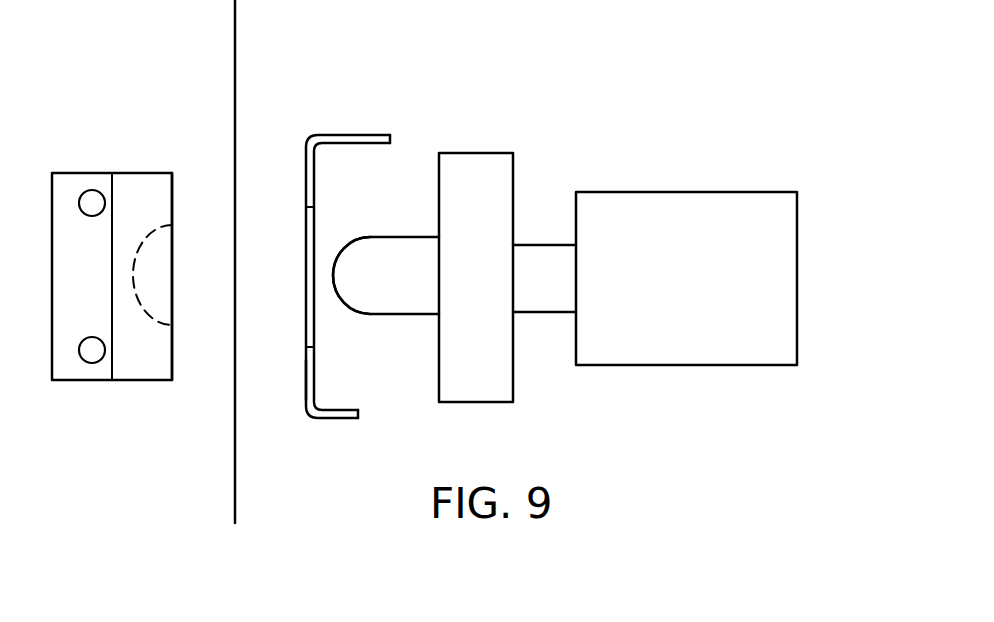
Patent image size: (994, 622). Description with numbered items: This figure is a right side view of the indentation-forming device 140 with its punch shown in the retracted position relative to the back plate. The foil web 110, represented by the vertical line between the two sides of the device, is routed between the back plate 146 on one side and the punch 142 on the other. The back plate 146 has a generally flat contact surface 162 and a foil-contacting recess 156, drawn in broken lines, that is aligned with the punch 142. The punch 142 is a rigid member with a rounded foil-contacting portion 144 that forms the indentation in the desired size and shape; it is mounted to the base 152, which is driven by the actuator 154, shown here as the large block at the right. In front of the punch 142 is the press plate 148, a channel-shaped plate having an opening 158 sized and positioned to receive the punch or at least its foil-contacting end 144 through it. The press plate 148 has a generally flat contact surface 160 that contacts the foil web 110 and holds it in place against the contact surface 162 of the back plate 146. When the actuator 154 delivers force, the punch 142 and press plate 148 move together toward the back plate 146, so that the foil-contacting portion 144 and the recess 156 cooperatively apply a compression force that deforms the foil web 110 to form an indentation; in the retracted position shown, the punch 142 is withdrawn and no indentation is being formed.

The foil web 110 is at (235, 56).
The indentation-forming device 140 is at (673, 435).
The punch 142 is at (390, 237).
The foil-contacting portion 144 is at (343, 307).
The back plate 146 is at (117, 173).
The press plate 148 is at (330, 135).
The base 152 is at (507, 151).
The actuator 154 is at (655, 191).
The foil-contacting recess 156 is at (160, 312).
The opening 158 is at (306, 245).
The contact surface 160 is at (306, 372).
The contact surface 162 is at (172, 195).